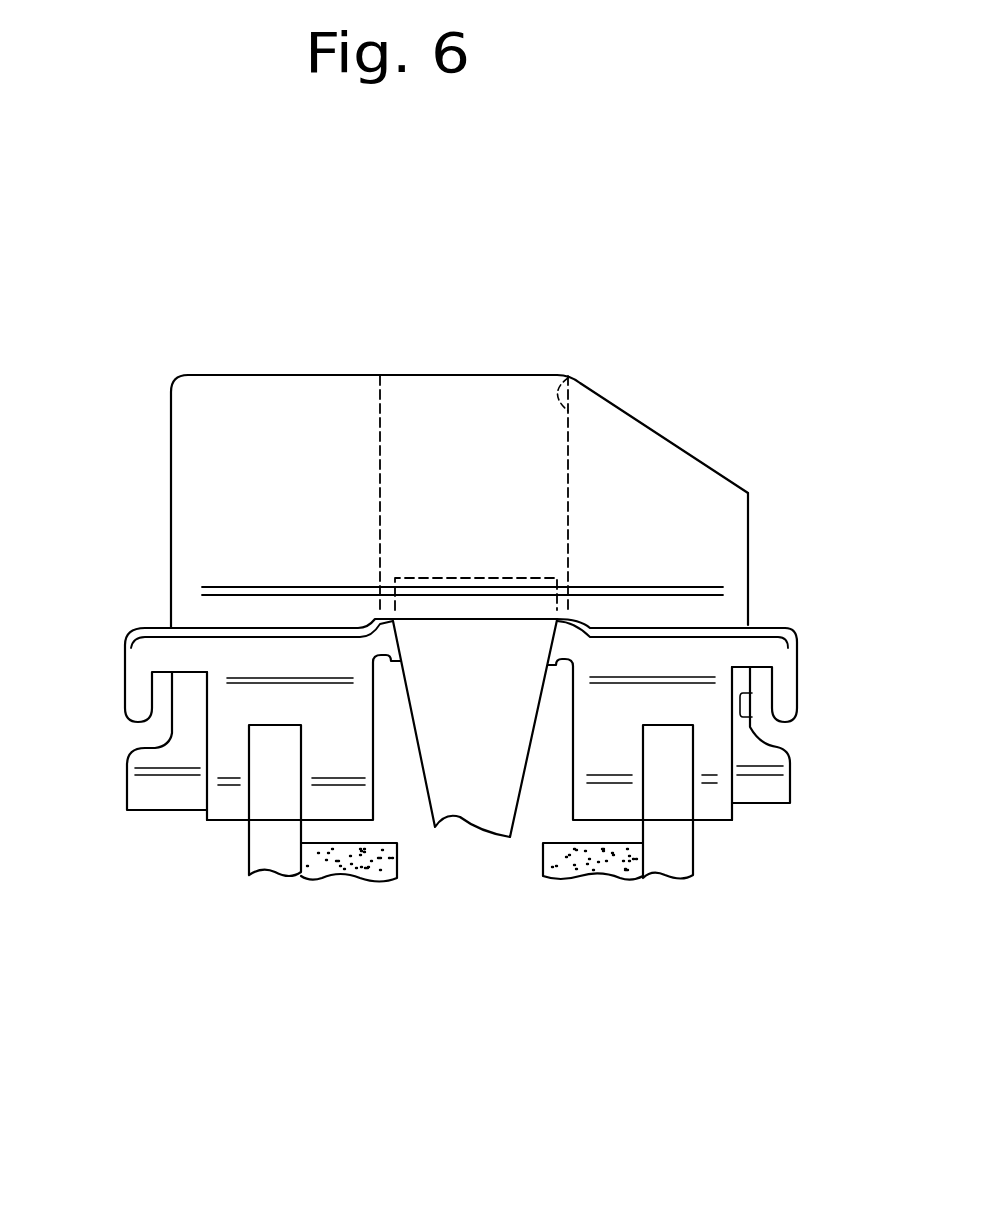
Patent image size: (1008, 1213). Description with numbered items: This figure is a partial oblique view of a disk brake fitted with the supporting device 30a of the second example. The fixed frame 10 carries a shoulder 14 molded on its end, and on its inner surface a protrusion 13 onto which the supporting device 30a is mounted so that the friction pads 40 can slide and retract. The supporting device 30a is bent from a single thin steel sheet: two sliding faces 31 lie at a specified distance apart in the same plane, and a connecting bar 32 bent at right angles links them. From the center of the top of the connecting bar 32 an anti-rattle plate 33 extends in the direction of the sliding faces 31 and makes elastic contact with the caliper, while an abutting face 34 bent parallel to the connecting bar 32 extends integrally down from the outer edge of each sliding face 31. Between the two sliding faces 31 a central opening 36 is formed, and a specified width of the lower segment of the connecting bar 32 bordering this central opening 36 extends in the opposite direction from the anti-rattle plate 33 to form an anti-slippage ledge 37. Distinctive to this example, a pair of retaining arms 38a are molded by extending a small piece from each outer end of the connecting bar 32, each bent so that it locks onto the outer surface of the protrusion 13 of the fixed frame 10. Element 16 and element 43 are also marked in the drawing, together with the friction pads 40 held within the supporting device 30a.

The fixed frame 10 is at (252, 362).
The shoulder 14 is at (665, 465).
The locking projection 16 is at (562, 368).
The anti-slippage ledge 37 is at (433, 578).
The supporting device 30a is at (790, 602).
The connecting bar 32 is at (170, 652).
The retaining arm 38a is at (787, 700).
The sliding face 31 is at (218, 735).
The abutting face 34 is at (218, 812).
The anti-rattle plate 33 is at (472, 808).
The central opening 36 is at (547, 783).
The protrusion 13 is at (752, 752).
The connecting pin 43 is at (267, 780).
The friction pad 40 is at (328, 898).